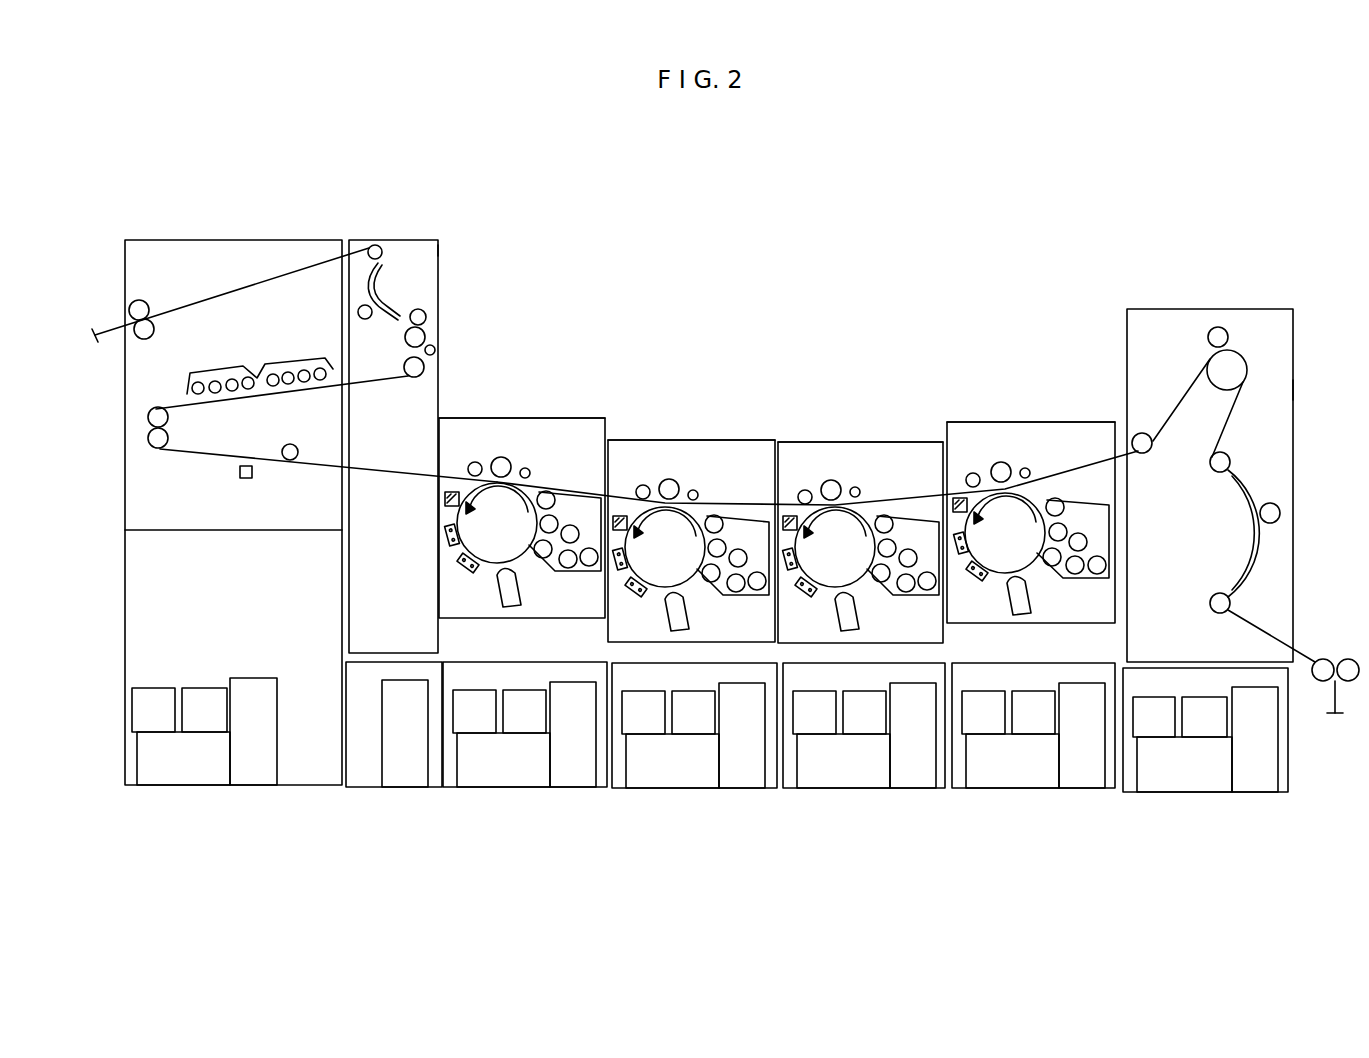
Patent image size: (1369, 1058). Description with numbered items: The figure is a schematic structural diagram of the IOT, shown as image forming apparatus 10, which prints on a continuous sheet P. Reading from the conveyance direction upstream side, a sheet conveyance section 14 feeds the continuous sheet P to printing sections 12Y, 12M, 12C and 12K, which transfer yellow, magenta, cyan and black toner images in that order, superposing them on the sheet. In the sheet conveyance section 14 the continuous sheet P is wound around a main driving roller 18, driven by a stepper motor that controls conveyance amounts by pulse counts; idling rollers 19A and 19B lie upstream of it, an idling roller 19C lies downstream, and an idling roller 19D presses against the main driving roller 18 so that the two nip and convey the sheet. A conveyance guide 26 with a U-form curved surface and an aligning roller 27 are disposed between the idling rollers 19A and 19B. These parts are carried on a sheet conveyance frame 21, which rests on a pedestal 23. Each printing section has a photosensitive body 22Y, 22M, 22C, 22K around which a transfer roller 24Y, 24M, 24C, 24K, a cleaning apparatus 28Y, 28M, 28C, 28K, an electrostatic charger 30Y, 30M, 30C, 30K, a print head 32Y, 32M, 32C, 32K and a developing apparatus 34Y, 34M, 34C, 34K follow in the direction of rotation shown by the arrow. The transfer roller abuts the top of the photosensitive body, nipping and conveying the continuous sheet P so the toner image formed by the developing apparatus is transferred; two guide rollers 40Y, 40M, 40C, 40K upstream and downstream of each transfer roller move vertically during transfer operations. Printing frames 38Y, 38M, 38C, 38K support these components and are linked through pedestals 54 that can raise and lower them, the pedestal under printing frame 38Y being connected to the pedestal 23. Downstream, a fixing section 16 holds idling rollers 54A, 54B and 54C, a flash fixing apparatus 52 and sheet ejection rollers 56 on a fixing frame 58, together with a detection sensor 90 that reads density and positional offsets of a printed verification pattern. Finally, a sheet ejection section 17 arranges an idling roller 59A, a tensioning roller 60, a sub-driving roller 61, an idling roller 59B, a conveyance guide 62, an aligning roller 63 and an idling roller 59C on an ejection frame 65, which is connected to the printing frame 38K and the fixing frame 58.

The image forming apparatus 10 is at (975, 170).
The sheet conveyance section 14 is at (1250, 308).
The fixing section 16 is at (272, 240).
The sheet ejection section 17 is at (420, 240).
The main driving roller 18 is at (1245, 362).
The idling roller 19A is at (1211, 607).
The idling roller 19B is at (1228, 455).
The idling roller 19C is at (1146, 454).
The idling roller 19D is at (1207, 338).
The sheet conveyance frame 21 is at (1293, 390).
The pedestal 23 is at (1290, 778).
The conveyance guide 26 is at (1252, 540).
The aligning roller 27 is at (1281, 513).
The printing section 12K is at (522, 476).
The printing section 12C is at (691, 500).
The printing section 12M is at (860, 501).
The printing section 12Y is at (1031, 481).
The photosensitive body 22K is at (514, 547).
The photosensitive body 22C is at (683, 571).
The photosensitive body 22M is at (854, 572).
The photosensitive body 22Y is at (1020, 555).
The transfer roller 24K is at (529, 449).
The transfer roller 24C is at (697, 471).
The transfer roller 24M is at (860, 472).
The transfer roller 24Y is at (1025, 453).
The cleaning apparatus 28K is at (415, 504).
The cleaning apparatus 28C is at (624, 442).
The cleaning apparatus 28M is at (794, 443).
The cleaning apparatus 28Y is at (962, 425).
The electrostatic charger 30K is at (419, 555).
The electrostatic charger 30C is at (638, 592).
The electrostatic charger 30M is at (809, 593).
The electrostatic charger 30Y is at (975, 577).
The print head 32K is at (506, 614).
The print head 32C is at (643, 730).
The print head 32M is at (817, 727).
The print head 32Y is at (1020, 620).
The developing apparatus 34K is at (565, 575).
The developing apparatus 34C is at (733, 671).
The developing apparatus 34M is at (910, 672).
The developing apparatus 34Y is at (1077, 581).
The printing frame 38K is at (522, 392).
The printing frame 38C is at (691, 414).
The printing frame 38M is at (860, 416).
The printing frame 38Y is at (1031, 396).
The guide rollers 40K is at (524, 453).
The guide rollers 40C is at (691, 476).
The guide rollers 40M is at (859, 474).
The guide rollers 40Y is at (1032, 438).
The flash fixing apparatus 52 is at (253, 369).
The pedestal 54 is at (509, 789).
The idling roller 54A is at (291, 461).
The idling roller 54B is at (158, 450).
The idling roller 54C is at (149, 414).
The sheet ejection rollers 56 is at (152, 316).
The fixing frame 58 is at (172, 241).
The idling roller 59A is at (413, 377).
The idling roller 59B is at (427, 315).
The idling roller 59C is at (371, 246).
The tensioning roller 60 is at (436, 349).
The sub-driving roller 61 is at (405, 338).
The conveyance guide 62 is at (384, 300).
The aligning roller 63 is at (358, 312).
The ejection frame 65 is at (440, 249).
The detection sensor 90 is at (249, 480).
The continuous sheet P is at (1180, 400).